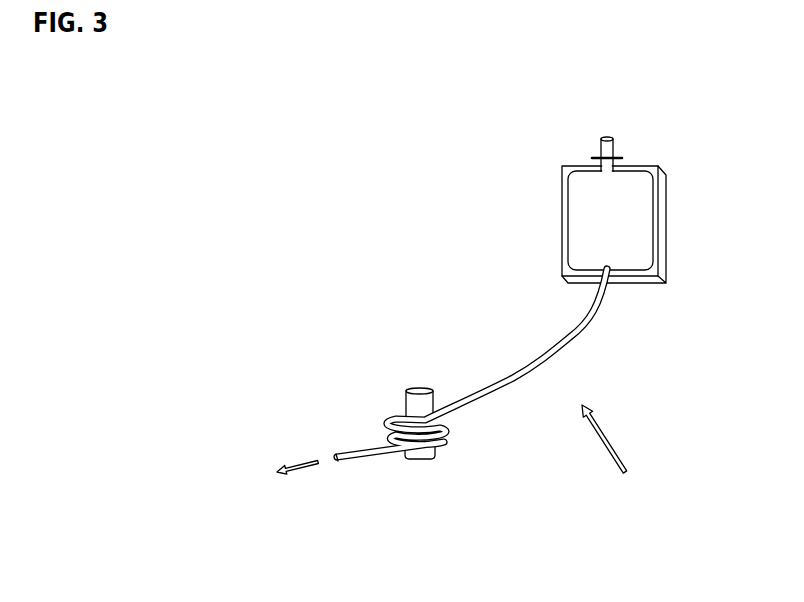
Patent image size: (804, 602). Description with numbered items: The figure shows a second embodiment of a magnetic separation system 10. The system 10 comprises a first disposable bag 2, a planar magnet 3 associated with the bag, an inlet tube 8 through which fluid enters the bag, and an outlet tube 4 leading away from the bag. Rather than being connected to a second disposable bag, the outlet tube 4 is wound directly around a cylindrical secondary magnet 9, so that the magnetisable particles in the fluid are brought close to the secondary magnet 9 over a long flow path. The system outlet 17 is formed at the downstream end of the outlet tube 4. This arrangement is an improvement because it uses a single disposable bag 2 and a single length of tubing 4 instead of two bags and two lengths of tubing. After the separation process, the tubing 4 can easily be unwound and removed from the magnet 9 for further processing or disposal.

The first disposable bag 2 is at (585, 222).
The planar magnet 3 is at (646, 276).
The outlet tube 4 is at (568, 337).
The inlet tube 8 is at (612, 136).
The cylindrical secondary magnet 9 is at (412, 403).
The system 10 is at (616, 460).
The system outlet 17 is at (273, 473).